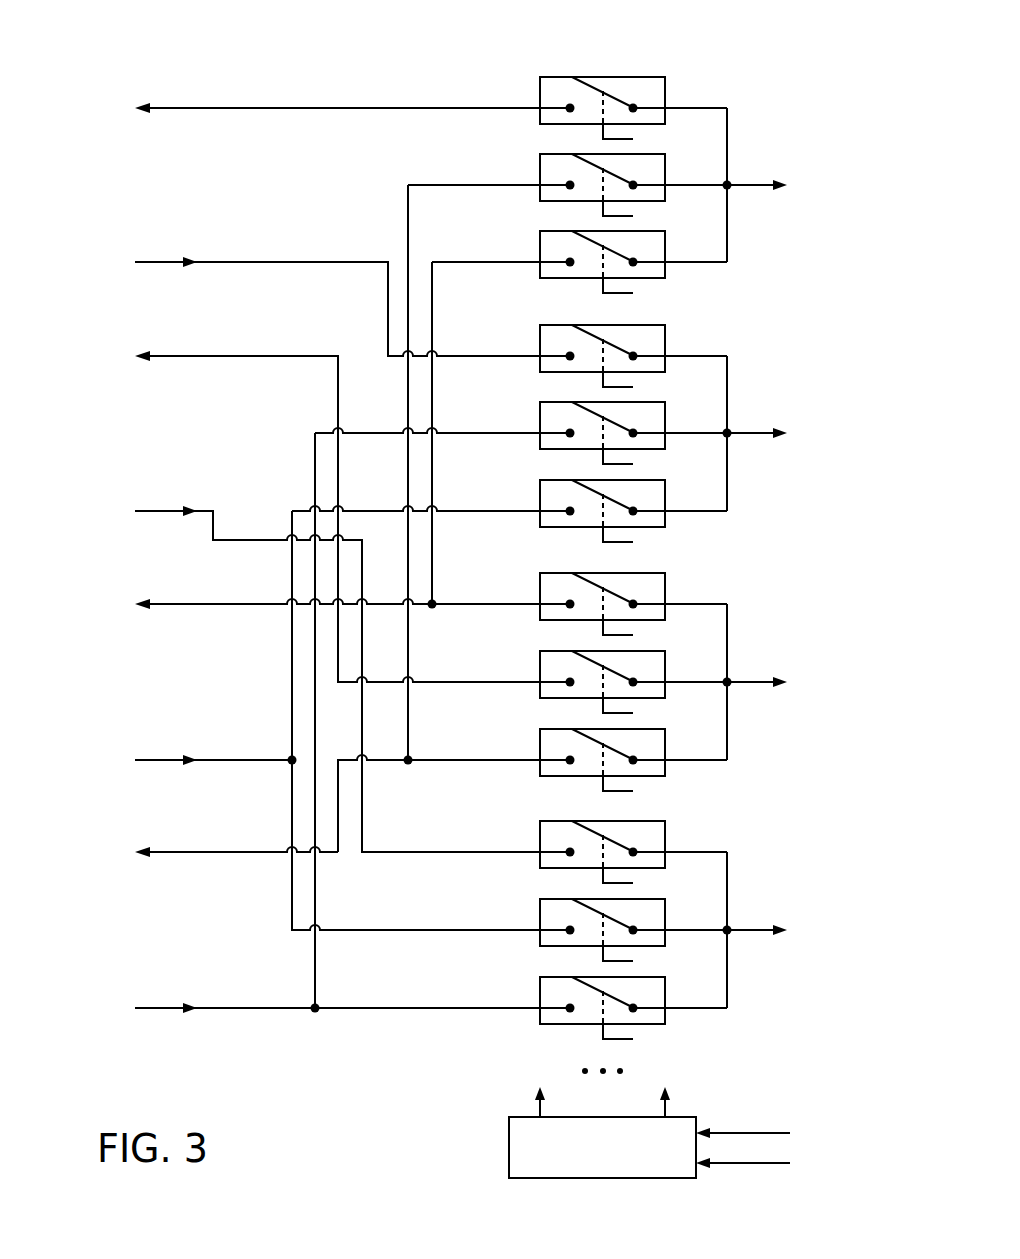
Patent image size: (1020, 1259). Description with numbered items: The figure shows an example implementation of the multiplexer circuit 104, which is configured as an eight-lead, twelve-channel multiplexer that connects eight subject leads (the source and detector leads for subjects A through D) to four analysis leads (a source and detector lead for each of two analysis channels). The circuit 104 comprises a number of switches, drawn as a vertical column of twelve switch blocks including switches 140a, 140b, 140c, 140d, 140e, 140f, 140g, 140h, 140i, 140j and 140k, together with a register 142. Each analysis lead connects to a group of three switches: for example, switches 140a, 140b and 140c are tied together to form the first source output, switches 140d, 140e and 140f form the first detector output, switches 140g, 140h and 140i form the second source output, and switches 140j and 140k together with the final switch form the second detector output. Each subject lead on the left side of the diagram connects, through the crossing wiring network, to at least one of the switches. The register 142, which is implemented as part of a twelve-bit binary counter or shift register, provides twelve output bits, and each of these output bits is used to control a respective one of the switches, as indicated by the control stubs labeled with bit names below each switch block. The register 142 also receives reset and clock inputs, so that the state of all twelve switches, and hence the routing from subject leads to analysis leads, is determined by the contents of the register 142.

The multiplexer circuit 104 is at (355, 32).
The switch 140a is at (549, 77).
The switch 140b is at (549, 154).
The switch 140c is at (549, 231).
The switch 140d is at (549, 325).
The switch 140e is at (549, 402).
The switch 140f is at (549, 480).
The switch 140g is at (549, 573).
The switch 140h is at (549, 651).
The switch 140i is at (549, 729).
The switch 140j is at (549, 821).
The switch 140k is at (549, 899).
The register 142 is at (522, 1117).